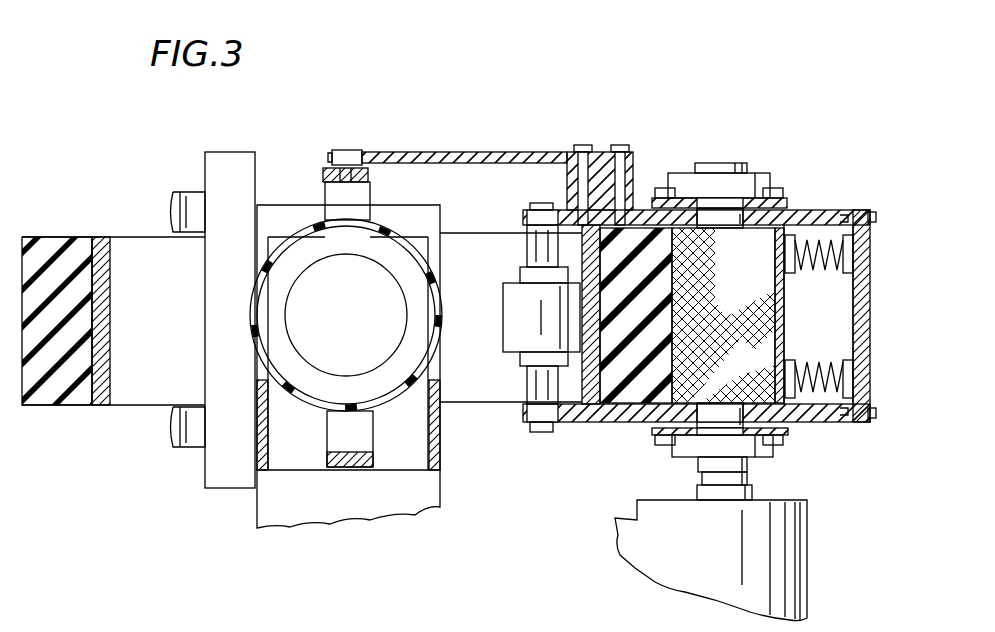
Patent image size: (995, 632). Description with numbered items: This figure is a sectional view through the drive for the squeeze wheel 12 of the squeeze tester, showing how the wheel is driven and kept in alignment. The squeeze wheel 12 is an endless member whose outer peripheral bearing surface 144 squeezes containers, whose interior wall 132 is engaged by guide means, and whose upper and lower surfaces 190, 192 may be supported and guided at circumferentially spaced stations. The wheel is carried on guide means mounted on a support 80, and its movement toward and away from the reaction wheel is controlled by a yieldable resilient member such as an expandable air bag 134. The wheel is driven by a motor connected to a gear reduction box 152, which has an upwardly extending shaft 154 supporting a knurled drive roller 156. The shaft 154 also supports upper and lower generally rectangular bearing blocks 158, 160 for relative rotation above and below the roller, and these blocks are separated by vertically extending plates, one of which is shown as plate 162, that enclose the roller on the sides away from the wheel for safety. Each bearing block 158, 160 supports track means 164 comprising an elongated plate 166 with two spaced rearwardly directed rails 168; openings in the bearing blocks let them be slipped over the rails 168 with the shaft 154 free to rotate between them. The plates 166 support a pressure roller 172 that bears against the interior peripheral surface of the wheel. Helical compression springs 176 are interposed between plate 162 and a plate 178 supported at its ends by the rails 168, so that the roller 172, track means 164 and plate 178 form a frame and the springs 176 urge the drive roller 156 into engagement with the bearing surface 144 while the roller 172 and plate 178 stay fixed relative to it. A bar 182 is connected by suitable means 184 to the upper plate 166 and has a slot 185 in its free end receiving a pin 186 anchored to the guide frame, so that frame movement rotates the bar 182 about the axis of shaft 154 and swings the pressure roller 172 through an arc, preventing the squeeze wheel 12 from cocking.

The squeeze wheel 12 is at (120, 218).
The support 80 is at (432, 488).
The interior wall 132 is at (110, 397).
The expandable air bag 134 is at (442, 302).
The peripheral bearing surface 144 is at (26, 398).
The gear reduction box 152 is at (650, 566).
The shaft 154 is at (748, 480).
The drive roller 156 is at (660, 400).
The upper bearing block 158 is at (770, 180).
The lower bearing block 160 is at (770, 452).
The vertically extending plate 162 is at (788, 322).
The track means 164 is at (798, 212).
The elongated plate 166 is at (640, 210).
The rails 168 is at (830, 220).
The pressure roller 172 is at (512, 330).
The helical compression springs 176 is at (862, 443).
The plate 178 is at (860, 297).
The bar 182 is at (471, 158).
The connecting means 184 is at (600, 152).
The slot 185 is at (370, 160).
The pin 186 is at (346, 150).
The upper surface 190 is at (66, 236).
The lower surface 192 is at (75, 407).